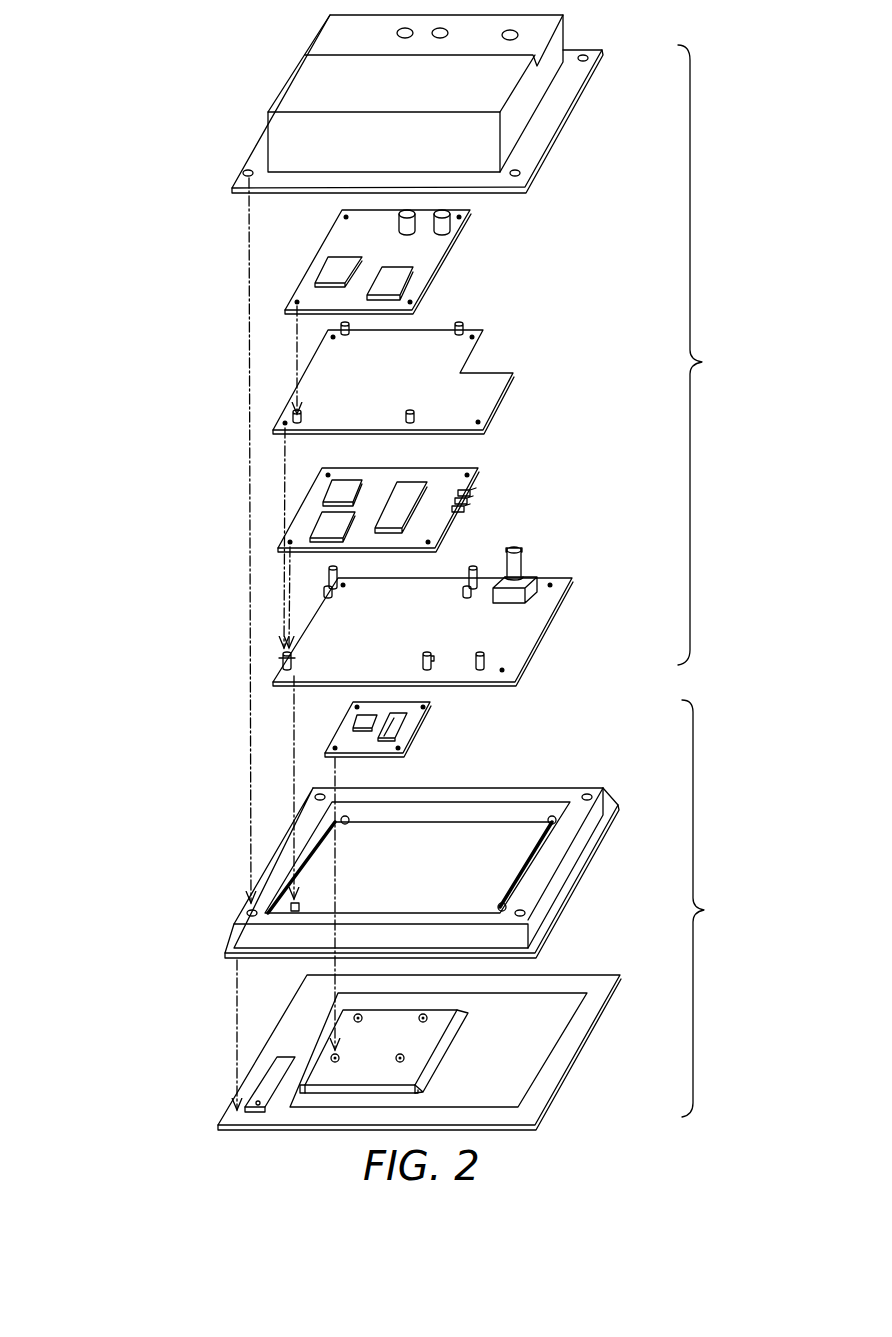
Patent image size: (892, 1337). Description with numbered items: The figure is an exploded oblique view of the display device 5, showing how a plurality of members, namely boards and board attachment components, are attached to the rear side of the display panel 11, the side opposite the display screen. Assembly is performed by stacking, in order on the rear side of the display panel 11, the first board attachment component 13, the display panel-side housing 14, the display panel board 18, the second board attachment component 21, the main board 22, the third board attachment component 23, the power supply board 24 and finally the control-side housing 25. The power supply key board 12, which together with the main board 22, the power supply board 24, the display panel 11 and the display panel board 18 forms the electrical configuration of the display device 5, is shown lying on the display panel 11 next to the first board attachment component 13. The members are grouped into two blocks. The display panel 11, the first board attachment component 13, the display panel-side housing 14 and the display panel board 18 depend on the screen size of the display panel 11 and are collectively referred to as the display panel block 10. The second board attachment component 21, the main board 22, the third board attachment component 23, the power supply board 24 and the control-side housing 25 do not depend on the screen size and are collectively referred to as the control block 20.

The display device 5 is at (92, 158).
The display panel block 10 is at (717, 908).
The display panel 11 is at (577, 1068).
The power supply key board 12 is at (272, 1077).
The first board attachment component 13 is at (455, 1048).
The display panel-side housing 14 is at (578, 883).
The display panel board 18 is at (422, 730).
The control block 20 is at (713, 355).
The second board attachment component 21 is at (557, 637).
The main board 22 is at (487, 478).
The third board attachment component 23 is at (517, 390).
The power supply board 24 is at (449, 265).
The control-side housing 25 is at (571, 123).